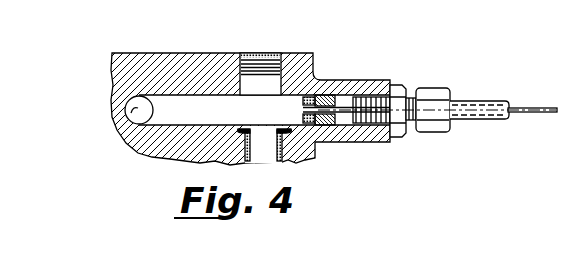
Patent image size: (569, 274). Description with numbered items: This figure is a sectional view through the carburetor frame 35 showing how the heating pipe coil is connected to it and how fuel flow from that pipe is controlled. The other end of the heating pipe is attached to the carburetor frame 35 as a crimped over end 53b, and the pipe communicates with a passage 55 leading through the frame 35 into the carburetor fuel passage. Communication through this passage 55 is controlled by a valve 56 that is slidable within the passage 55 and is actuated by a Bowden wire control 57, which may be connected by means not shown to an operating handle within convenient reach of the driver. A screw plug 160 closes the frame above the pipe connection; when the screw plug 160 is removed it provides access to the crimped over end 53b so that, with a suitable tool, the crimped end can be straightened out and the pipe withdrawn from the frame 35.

The carburetor frame 35 is at (314, 76).
The passage 55 is at (127, 118).
The screw plug 160 is at (270, 53).
The crimped over end of pipe 53b is at (269, 135).
The valve 56 is at (355, 81).
The Bowden wire control 57 is at (521, 106).